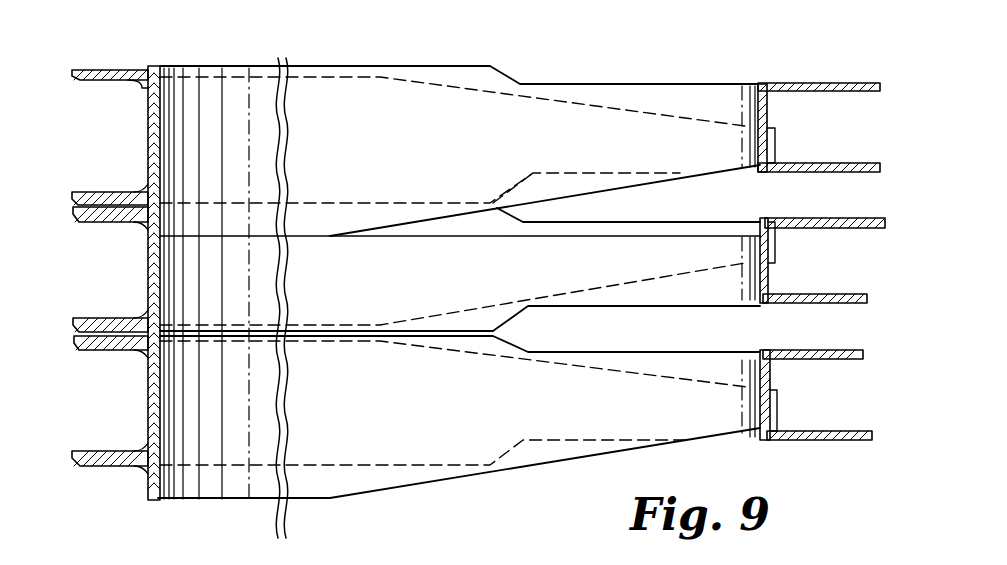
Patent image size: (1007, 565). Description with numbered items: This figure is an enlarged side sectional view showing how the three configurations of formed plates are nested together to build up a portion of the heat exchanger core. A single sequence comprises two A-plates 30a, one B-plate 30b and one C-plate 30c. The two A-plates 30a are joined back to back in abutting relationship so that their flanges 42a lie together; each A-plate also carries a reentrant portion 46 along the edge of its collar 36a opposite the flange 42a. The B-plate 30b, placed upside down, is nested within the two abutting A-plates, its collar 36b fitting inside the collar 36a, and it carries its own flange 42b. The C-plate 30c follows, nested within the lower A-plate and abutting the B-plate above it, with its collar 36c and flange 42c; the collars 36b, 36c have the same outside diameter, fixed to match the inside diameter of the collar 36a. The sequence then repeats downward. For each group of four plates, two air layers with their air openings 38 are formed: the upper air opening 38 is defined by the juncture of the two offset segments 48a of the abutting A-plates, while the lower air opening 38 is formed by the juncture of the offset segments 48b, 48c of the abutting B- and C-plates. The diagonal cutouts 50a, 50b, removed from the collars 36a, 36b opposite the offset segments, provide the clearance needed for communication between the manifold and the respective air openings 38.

The formed plate (A-plate) 30a is at (818, 162).
The formed plate (B-plate) 30b is at (818, 83).
The formed plate (C-plate) 30c is at (815, 294).
The collar of A-plate 36a is at (392, 188).
The collar of B-plate 36b is at (372, 133).
The collar of C-plate 36c is at (378, 289).
The air opening 38 is at (777, 203).
The flange portion of A-plate collar 42a is at (99, 190).
The flange portion of B-plate collar 42b is at (106, 70).
The flange portion of C-plate collar 42c is at (97, 315).
The reentrant portion 46 is at (140, 95).
The offset segment of A-plate 48a is at (590, 143).
The offset segment of B-plate 48b is at (668, 82).
The offset segment of C-plate 48c is at (704, 302).
The diagonal cutout of A-plate 50a is at (489, 94).
The diagonal cutout of B-plate 50b is at (469, 207).